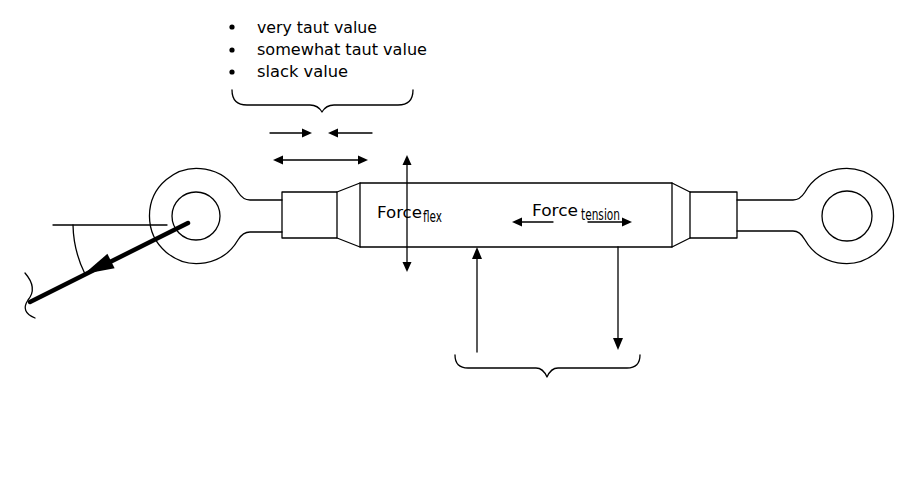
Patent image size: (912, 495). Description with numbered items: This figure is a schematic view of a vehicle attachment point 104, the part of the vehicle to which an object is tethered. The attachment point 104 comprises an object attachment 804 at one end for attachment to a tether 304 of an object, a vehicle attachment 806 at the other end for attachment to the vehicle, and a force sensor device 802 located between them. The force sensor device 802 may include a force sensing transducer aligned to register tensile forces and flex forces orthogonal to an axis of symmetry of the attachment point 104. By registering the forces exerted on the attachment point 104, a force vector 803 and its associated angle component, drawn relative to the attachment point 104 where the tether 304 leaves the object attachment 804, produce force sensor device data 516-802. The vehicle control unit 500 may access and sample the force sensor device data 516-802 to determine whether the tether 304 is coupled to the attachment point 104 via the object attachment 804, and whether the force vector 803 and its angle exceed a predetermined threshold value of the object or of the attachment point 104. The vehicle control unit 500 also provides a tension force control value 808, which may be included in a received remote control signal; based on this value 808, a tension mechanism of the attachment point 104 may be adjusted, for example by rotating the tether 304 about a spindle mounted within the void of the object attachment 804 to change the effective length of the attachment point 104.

The vehicle attachment point 104 is at (470, 292).
The object attachment 804 is at (167, 177).
The force sensor device 802 is at (647, 183).
The vehicle attachment 806 is at (808, 188).
The tether 304 is at (46, 309).
The force vector 803 is at (130, 258).
The tension force control value 808 is at (521, 299).
The force sensor device data 516-802 is at (674, 298).
The vehicle control unit 500 is at (547, 382).